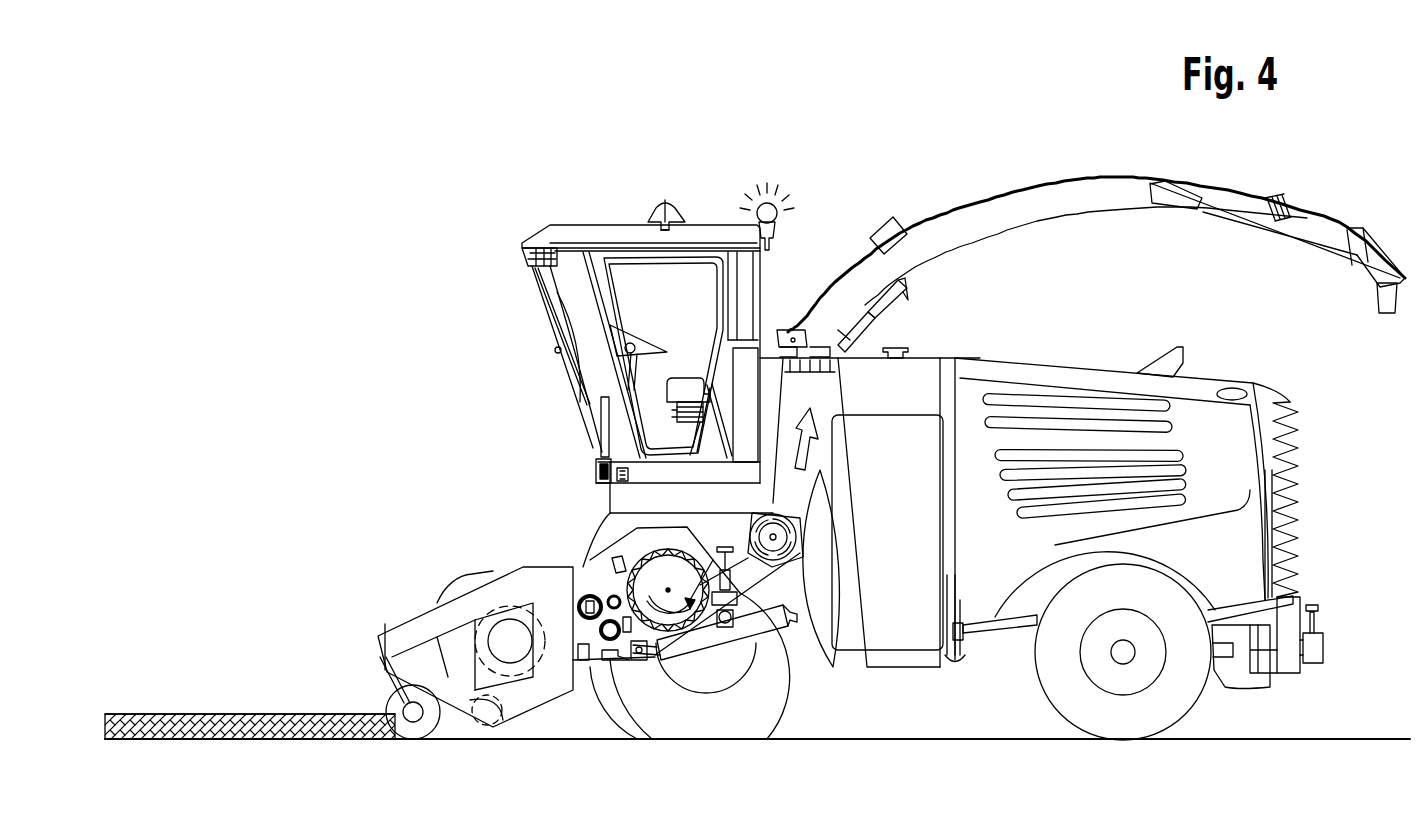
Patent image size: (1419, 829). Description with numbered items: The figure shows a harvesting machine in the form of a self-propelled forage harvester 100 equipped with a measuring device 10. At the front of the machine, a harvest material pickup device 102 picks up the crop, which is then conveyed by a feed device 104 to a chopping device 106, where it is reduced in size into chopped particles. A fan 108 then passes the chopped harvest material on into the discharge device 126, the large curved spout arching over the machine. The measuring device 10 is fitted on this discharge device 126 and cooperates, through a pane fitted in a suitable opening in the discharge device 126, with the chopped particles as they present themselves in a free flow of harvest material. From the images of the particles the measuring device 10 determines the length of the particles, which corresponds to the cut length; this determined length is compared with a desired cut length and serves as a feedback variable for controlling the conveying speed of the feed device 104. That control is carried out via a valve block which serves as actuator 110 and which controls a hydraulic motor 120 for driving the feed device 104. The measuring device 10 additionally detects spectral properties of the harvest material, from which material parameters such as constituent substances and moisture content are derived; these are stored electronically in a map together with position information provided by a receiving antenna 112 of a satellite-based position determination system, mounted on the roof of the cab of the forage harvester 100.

The measuring device 10 is at (885, 230).
The self-propelled forage harvester 100 is at (335, 387).
The harvest material pickup device 102 is at (397, 598).
The feed device 104 is at (583, 588).
The chopping device 106 is at (672, 622).
The fan 108 is at (780, 553).
The actuator 110 is at (583, 660).
The receiving antenna 112 is at (664, 210).
The hydraulic motor 120 is at (608, 658).
The discharge device 126 is at (1062, 185).